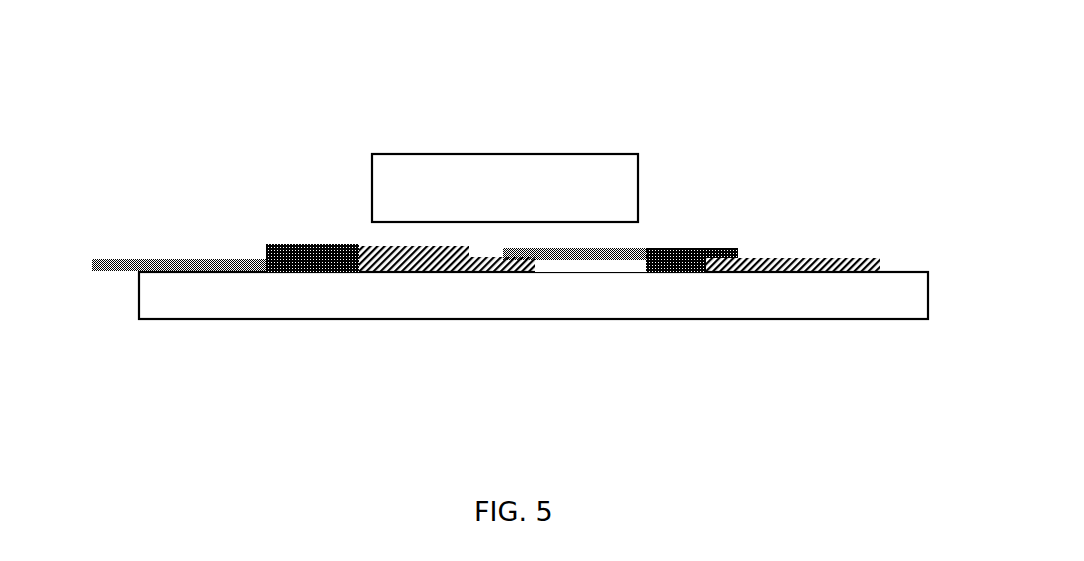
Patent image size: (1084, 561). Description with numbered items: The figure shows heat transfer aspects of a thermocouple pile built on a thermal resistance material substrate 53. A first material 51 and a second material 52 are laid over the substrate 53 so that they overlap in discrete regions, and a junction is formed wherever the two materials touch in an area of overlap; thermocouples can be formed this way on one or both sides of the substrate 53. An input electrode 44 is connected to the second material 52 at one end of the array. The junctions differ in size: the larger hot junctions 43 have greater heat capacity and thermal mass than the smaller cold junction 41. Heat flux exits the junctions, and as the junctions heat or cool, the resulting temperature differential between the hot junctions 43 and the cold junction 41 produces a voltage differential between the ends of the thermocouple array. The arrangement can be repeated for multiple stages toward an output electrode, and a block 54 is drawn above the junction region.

The cold junction 41 is at (515, 258).
The hot junction 43 is at (707, 265).
The input electrode 44 is at (137, 262).
The first material 51 is at (408, 197).
The second material 52 is at (402, 247).
The thermal resistance material substrate 53 is at (550, 313).
The upper body 54 is at (521, 187).